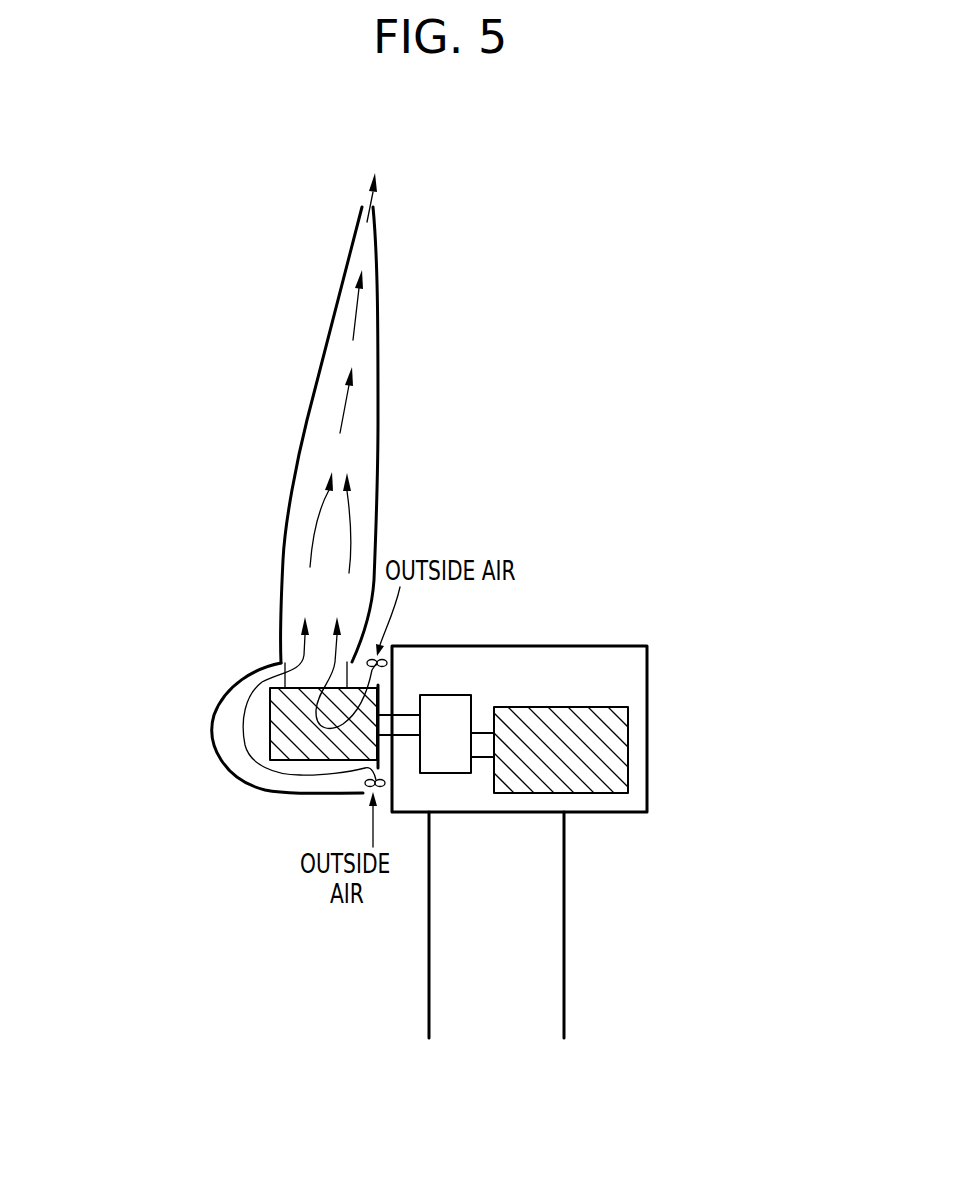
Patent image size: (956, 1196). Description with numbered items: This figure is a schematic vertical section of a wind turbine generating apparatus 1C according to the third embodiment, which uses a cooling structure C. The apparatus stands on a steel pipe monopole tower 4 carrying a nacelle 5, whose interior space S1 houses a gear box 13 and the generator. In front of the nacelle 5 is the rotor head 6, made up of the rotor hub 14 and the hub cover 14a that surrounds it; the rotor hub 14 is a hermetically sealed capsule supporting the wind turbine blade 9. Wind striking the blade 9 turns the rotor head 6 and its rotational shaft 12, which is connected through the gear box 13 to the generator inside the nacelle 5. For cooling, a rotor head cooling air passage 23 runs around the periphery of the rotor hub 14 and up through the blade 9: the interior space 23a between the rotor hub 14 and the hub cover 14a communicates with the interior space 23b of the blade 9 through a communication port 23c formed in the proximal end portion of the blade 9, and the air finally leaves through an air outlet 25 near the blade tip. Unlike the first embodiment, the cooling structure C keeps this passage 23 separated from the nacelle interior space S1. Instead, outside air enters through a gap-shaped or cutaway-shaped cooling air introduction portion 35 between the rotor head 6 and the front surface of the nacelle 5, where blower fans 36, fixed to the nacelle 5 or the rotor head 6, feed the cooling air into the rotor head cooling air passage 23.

The wind turbine generator 1C is at (625, 262).
The tower 4 is at (565, 937).
The nacelle 5 is at (580, 632).
The rotor head 6 is at (142, 728).
The wind turbine blade 9 is at (318, 382).
The rotational shaft 12 is at (403, 713).
The gear box 13 is at (450, 773).
The rotor hub 14 is at (270, 733).
The hub cover 14a is at (232, 770).
The rotor head cooling air passage 23 is at (352, 458).
The interior space 23a is at (233, 703).
The interior space of the wind turbine blade 23b is at (293, 558).
The communication port 23c is at (347, 672).
The air outlet 25 is at (384, 201).
The cooling air introduction portion 35 is at (370, 655).
The blower fan 36 is at (397, 660).
The interior space of the nacelle S1 is at (583, 701).
The cooling structure C is at (228, 950).